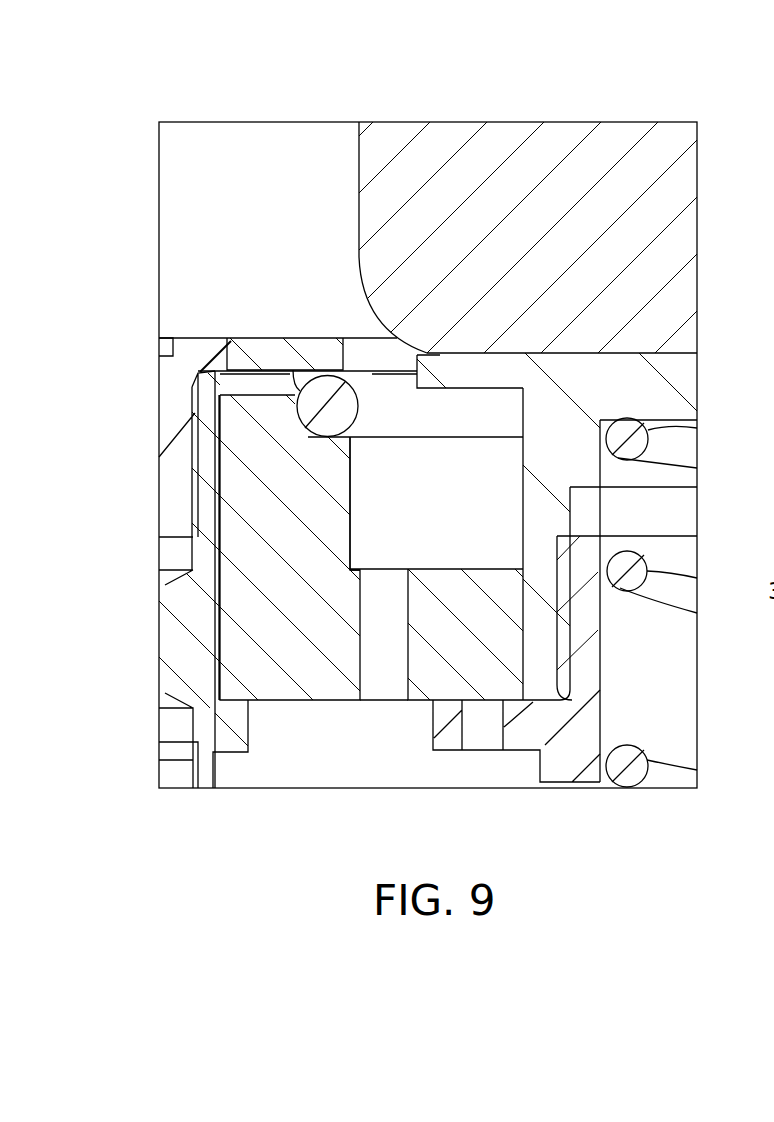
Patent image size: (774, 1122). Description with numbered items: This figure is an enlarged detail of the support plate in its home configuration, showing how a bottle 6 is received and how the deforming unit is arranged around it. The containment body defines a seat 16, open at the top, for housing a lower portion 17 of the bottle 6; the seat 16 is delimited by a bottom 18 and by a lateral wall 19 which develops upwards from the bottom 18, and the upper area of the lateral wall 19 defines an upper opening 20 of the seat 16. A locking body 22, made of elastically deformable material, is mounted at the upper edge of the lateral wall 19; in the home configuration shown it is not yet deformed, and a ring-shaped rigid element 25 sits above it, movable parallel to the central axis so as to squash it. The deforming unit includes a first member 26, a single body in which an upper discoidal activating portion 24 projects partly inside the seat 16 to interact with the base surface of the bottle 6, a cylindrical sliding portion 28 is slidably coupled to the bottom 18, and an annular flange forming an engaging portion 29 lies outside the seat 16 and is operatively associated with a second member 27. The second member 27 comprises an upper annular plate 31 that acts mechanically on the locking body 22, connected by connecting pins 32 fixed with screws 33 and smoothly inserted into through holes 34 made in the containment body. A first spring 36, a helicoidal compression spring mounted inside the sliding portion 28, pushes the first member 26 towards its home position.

The bottle 6 is at (673, 185).
The lower portion 17 is at (668, 297).
The upper opening 20 is at (370, 340).
The rigid element 25 is at (280, 358).
The upper annular plate 31 is at (233, 353).
The screws 33 is at (177, 417).
The locking body 22 is at (320, 405).
The connecting pins 32 is at (177, 630).
The through holes 34 is at (218, 660).
The second member 27 is at (216, 738).
The lateral wall 19 is at (338, 530).
The seat 16 is at (447, 497).
The bottom 18 is at (458, 582).
The engaging portion 29 is at (446, 738).
The activating portion 24 is at (677, 378).
The sliding portion 28 is at (535, 565).
The first member 26 is at (562, 645).
The first spring 36 is at (667, 588).